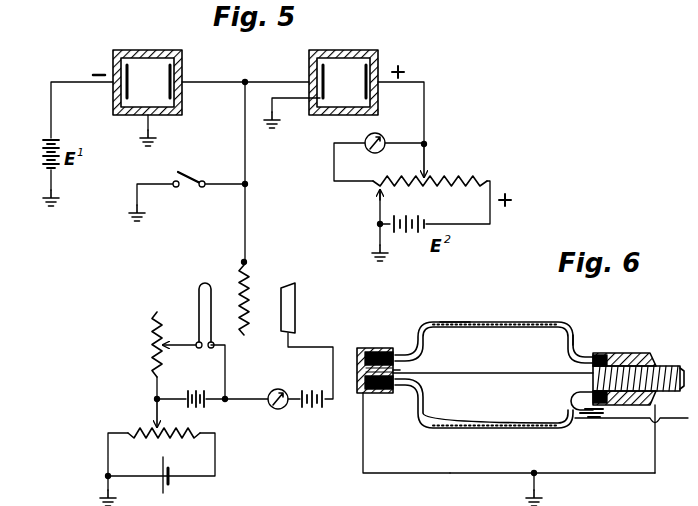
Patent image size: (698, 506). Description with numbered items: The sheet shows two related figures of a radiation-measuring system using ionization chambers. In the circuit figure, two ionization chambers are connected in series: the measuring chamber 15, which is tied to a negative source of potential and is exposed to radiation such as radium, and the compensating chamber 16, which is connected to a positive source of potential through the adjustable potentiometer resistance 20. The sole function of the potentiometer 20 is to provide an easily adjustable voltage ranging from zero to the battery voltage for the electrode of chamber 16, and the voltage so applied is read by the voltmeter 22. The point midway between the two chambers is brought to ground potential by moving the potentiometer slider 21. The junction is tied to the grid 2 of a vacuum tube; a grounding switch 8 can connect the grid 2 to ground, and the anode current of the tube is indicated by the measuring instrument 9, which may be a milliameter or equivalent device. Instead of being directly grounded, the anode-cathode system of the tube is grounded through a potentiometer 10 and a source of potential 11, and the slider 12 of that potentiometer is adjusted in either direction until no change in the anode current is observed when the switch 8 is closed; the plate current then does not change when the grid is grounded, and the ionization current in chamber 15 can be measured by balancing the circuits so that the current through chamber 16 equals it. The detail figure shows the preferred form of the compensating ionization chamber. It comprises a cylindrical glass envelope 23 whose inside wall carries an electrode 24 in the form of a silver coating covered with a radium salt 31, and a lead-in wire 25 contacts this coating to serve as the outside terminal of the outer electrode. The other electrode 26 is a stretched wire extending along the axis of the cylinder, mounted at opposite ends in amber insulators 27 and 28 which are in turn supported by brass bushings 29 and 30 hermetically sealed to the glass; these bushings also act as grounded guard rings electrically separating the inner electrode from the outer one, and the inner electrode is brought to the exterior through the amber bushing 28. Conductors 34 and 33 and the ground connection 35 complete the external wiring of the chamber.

In FIG. 5, the measuring chamber 15 is at (156, 49).
In FIG. 5, the compensating chamber 16 is at (360, 48).
In FIG. 5, the grounding switch 8 is at (176, 170).
In FIG. 5, the voltmeter 22 is at (363, 139).
In FIG. 5, the potentiometer slider 21 is at (429, 172).
In FIG. 5, the potentiometer resistance 20 is at (473, 179).
In FIG. 5, the grid 2 is at (251, 289).
In FIG. 5, the source of potential 11 is at (206, 386).
In FIG. 5, the measuring instrument 9 is at (281, 388).
In FIG. 5, the slider 12 is at (146, 416).
In FIG. 5, the potentiometer 10 is at (205, 433).
In FIG. 6, the envelope 23 is at (523, 317).
In FIG. 6, the radium salt 31 is at (456, 322).
In FIG. 6, the electrode 24 is at (575, 331).
In FIG. 6, the brass bushing 29 is at (360, 346).
In FIG. 6, the wire electrode 26 is at (470, 378).
In FIG. 6, the amber insulator 27 is at (400, 370).
In FIG. 6, the brass bushing 30 is at (633, 353).
In FIG. 6, the amber insulator 28 is at (672, 366).
In FIG. 6, the lead-in wire 25 is at (618, 419).
In FIG. 6, the conductor 34 is at (385, 449).
In FIG. 6, the conductor 33 is at (546, 489).
In FIG. 6, the ground connection 35 is at (565, 505).